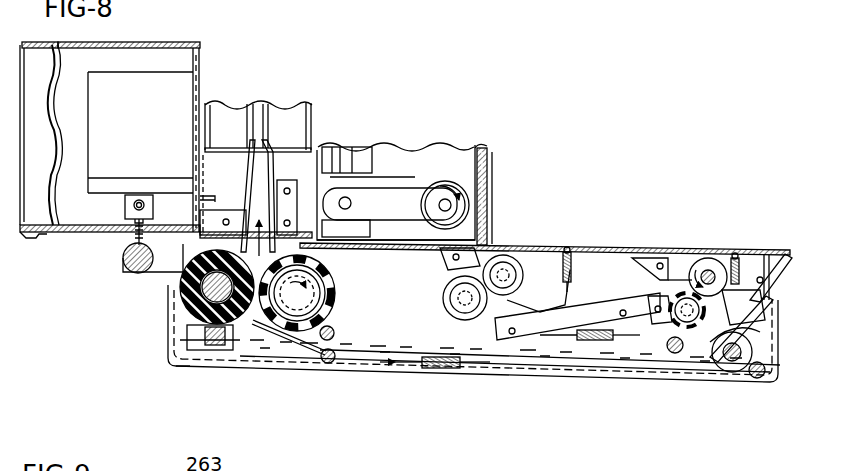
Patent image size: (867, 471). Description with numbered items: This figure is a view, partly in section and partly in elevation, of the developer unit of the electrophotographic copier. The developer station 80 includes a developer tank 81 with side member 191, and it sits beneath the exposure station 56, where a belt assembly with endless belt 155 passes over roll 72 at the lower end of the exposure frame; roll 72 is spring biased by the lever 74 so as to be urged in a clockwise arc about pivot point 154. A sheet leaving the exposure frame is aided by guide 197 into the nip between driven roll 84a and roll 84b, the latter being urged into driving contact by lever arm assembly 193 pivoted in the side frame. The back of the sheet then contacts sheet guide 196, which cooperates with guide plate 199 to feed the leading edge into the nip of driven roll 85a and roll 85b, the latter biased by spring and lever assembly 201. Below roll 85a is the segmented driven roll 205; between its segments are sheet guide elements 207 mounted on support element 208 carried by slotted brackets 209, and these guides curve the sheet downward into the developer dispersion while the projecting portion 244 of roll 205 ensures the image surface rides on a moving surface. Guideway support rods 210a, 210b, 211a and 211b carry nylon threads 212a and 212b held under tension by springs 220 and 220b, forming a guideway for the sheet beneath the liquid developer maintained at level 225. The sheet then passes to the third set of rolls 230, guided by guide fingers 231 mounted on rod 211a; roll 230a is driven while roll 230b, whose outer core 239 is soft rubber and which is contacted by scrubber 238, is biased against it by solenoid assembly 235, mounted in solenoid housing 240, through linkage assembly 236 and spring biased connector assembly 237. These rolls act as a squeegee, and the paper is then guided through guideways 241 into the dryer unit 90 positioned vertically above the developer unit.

The solenoid assembly 235 is at (160, 142).
The solenoid housing 240 is at (183, 44).
The spring biased connector assembly 237 is at (130, 236).
The linkage assembly 236 is at (165, 268).
The drying station 90 is at (259, 99).
The guideways 241 is at (250, 171).
The exposure station 56 is at (398, 140).
The lever 74 is at (402, 216).
The pivot point 154 is at (345, 198).
The roll 72 is at (444, 182).
The endless belt 155 is at (483, 144).
The side member 191 is at (607, 252).
The guide 197 is at (447, 277).
The roll 84b is at (530, 236).
The roll 84a is at (450, 298).
The lever arm assembly 193 is at (547, 282).
The guide plate 199 is at (655, 256).
The roll 85a is at (705, 266).
The roll 85b is at (668, 330).
The support element 208 is at (740, 262).
The slotted bracket 209 is at (762, 258).
The sheet guide element 207 is at (737, 307).
The spring and lever assembly 201 is at (722, 314).
The projecting portion 244 is at (707, 350).
The driven roll 205 is at (728, 372).
The guideway support rod 210a is at (761, 378).
The guideway support rod 210b is at (677, 353).
The sheet guide 196 is at (548, 322).
The spring 220b is at (597, 345).
The nylon thread 212b is at (638, 352).
The developer station 80 is at (380, 380).
The developer tank 81 is at (477, 378).
The nylon thread 212a is at (505, 375).
The spring 220 is at (430, 370).
The outer core 239 is at (200, 332).
The scrubber 238 is at (215, 350).
The level 225 is at (185, 335).
The roll 230b is at (239, 330).
The third set of rolls 230 is at (341, 278).
The roll 230a is at (330, 297).
The guide finger 231 is at (262, 333).
The guideway support rod 211a is at (325, 340).
The guideway support rod 211b is at (337, 362).